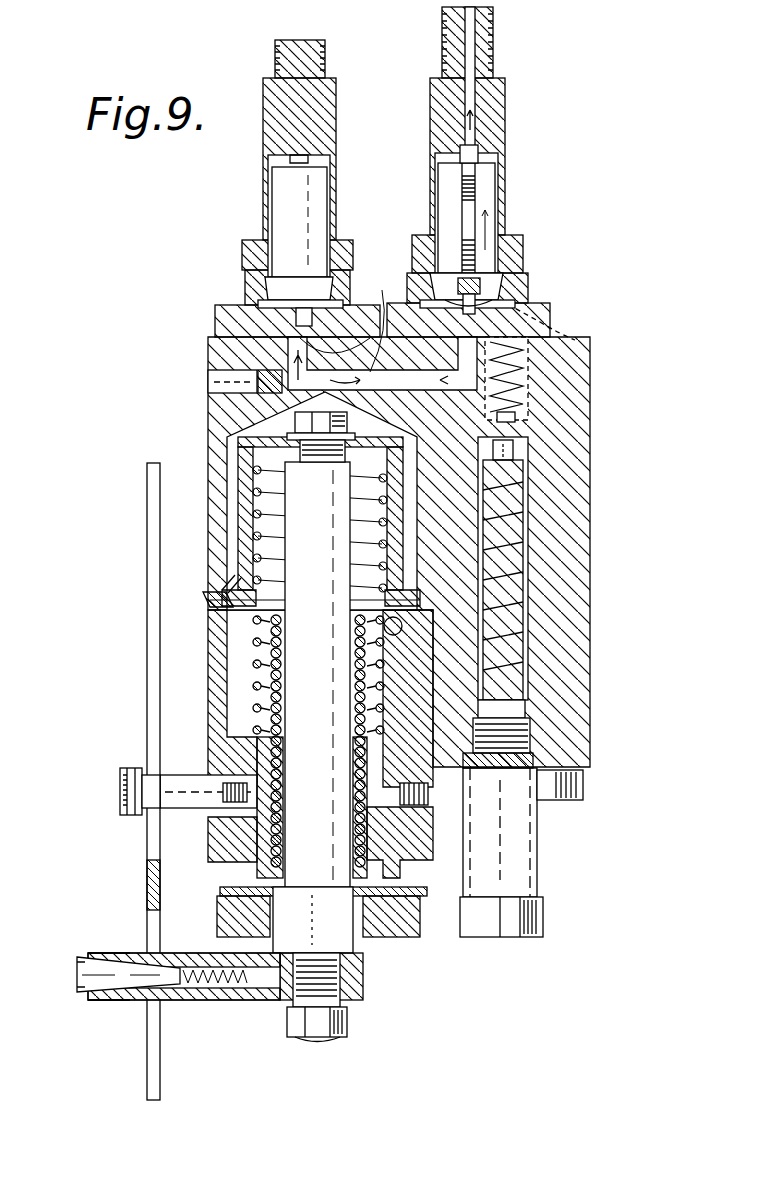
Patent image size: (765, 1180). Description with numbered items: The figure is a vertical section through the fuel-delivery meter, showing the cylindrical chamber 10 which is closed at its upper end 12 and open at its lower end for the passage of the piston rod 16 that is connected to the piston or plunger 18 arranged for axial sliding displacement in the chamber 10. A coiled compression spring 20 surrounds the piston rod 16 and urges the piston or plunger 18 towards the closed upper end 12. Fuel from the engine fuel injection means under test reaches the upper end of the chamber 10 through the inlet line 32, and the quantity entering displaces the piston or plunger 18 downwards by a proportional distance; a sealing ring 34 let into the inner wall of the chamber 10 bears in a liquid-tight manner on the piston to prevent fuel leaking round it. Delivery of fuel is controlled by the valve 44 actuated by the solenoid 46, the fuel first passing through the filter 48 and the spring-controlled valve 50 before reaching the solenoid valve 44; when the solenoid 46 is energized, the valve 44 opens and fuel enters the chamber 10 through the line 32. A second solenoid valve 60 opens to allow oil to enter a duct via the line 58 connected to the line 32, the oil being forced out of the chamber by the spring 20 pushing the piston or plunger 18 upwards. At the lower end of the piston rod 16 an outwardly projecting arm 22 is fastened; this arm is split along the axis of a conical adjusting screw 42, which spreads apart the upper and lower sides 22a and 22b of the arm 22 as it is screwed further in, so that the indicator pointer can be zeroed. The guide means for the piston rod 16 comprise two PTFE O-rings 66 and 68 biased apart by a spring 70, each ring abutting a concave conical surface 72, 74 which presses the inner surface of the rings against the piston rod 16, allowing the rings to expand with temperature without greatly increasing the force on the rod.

The cylindrical chamber 10 is at (233, 508).
The closed upper end 12 is at (257, 410).
The piston rod 16 is at (297, 542).
The piston or plunger 18 is at (243, 450).
The coiled compression spring 20 is at (233, 583).
The outwardly projecting arm 22 is at (240, 995).
The upper side of the arm 22a is at (118, 953).
The lower side of the arm 22b is at (110, 1000).
The inlet line 32 is at (372, 330).
The sealing ring 34 is at (410, 580).
The conical adjusting screw 42 is at (80, 960).
The valve 44 is at (511, 156).
The solenoid 46 is at (485, 290).
The filter 48 is at (517, 523).
The spring-controlled valve 50 is at (530, 360).
The line 58 is at (300, 355).
The solenoid valve 60 is at (256, 195).
The PTFE 'O' ring 66 is at (263, 620).
The PTFE 'O' ring 68 is at (282, 857).
The spring 70 is at (350, 760).
The concave conical surface 72 is at (400, 628).
The concave conical surface 74 is at (373, 940).